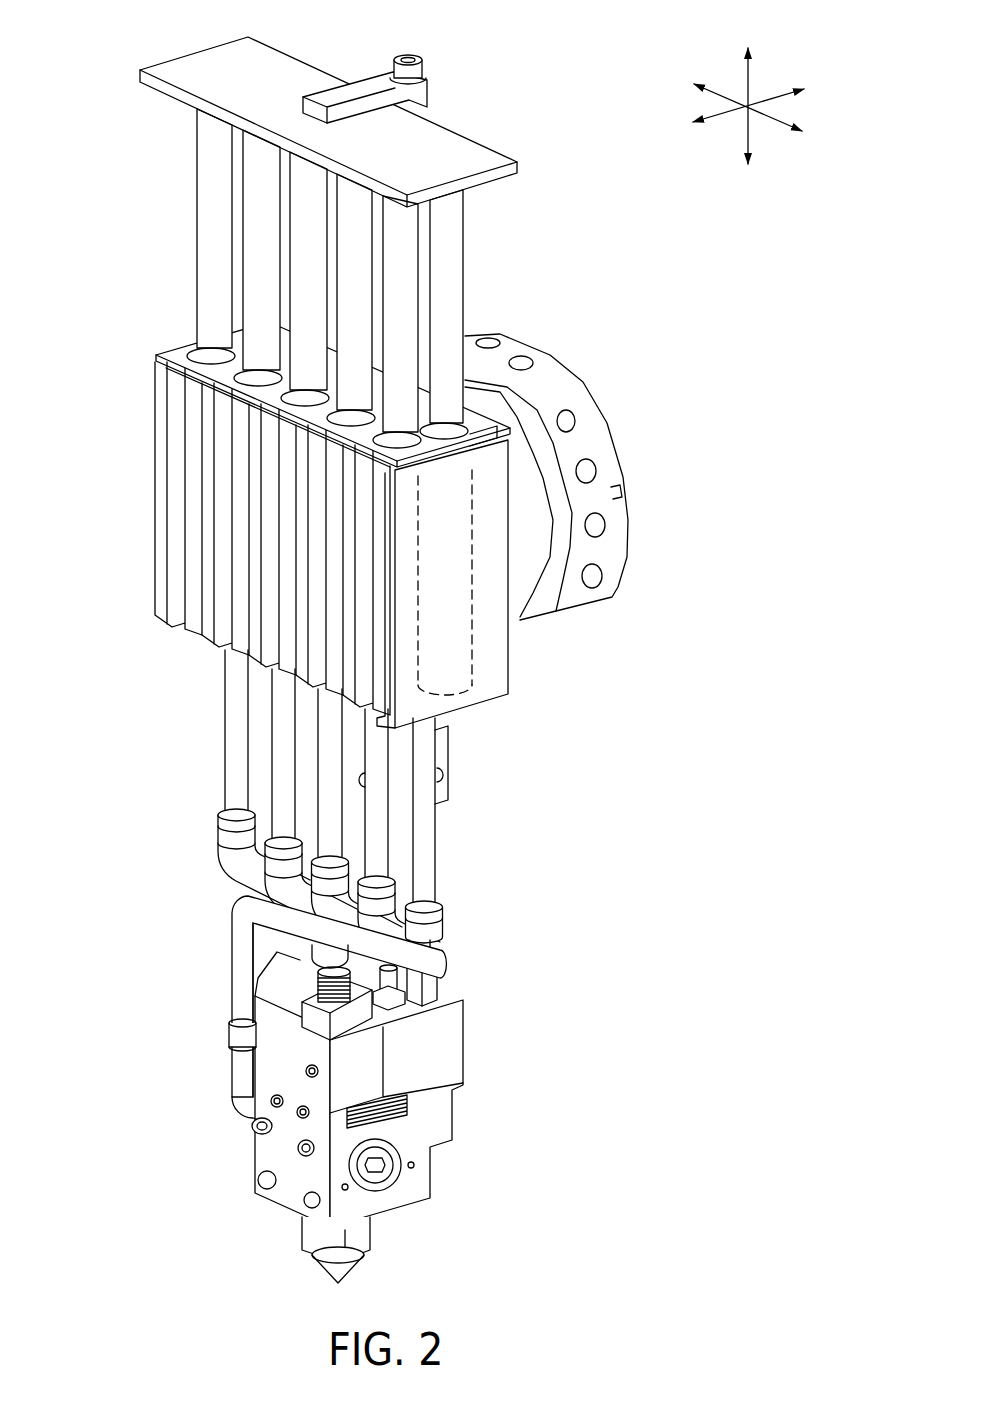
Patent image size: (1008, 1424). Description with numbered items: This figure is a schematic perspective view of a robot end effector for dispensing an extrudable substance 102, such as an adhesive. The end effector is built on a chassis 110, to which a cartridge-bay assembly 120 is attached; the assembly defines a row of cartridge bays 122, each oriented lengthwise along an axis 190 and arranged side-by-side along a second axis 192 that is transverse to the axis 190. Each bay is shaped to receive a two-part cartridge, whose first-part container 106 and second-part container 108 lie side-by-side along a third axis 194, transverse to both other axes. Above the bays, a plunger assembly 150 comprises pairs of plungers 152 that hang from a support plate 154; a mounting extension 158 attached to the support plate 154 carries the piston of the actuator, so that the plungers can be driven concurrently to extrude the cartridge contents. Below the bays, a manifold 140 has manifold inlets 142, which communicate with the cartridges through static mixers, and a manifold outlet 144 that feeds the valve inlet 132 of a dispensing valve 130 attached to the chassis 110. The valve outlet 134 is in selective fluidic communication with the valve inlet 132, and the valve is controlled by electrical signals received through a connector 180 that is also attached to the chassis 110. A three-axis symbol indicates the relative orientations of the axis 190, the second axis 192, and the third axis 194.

The extrudable substance 102 is at (303, 813).
The first-part container 106 is at (233, 538).
The second-part container 108 is at (480, 656).
The chassis 110 is at (405, 838).
The cartridge-bay assembly 120 is at (483, 584).
The cartridge bays 122 is at (188, 445).
The dispensing valve 130 is at (255, 1170).
The valve inlet 132 is at (217, 1093).
The valve outlet 134 is at (333, 1288).
The manifold 140 is at (276, 1018).
The manifold inlets 142 is at (220, 807).
The manifold outlet 144 is at (221, 1065).
The plunger assembly 150 is at (361, 216).
The pairs of plungers 152 is at (197, 189).
The support plate 154 is at (196, 53).
The mounting extension 158 is at (365, 79).
The connector 180 is at (547, 366).
The axis 190 is at (750, 70).
The second axis 192 is at (718, 92).
The third axis 194 is at (778, 95).